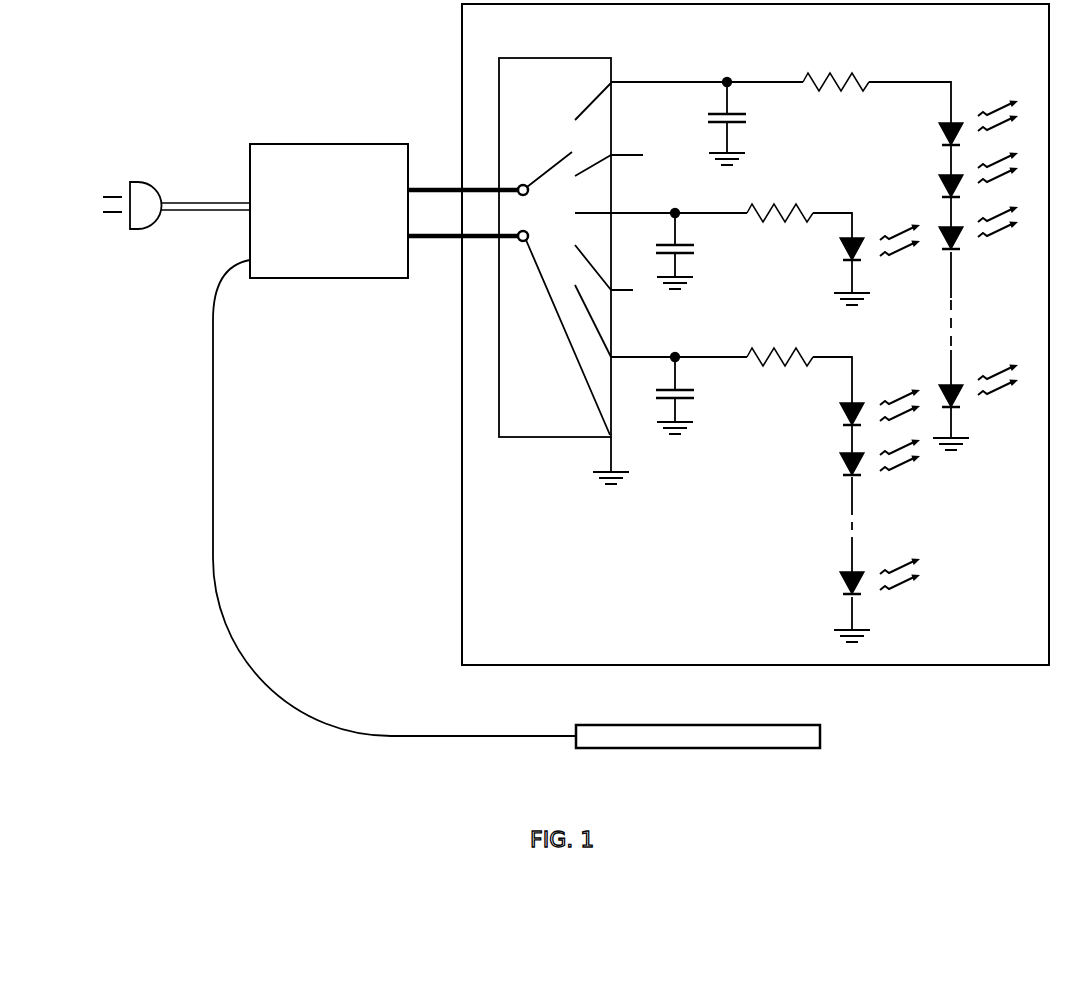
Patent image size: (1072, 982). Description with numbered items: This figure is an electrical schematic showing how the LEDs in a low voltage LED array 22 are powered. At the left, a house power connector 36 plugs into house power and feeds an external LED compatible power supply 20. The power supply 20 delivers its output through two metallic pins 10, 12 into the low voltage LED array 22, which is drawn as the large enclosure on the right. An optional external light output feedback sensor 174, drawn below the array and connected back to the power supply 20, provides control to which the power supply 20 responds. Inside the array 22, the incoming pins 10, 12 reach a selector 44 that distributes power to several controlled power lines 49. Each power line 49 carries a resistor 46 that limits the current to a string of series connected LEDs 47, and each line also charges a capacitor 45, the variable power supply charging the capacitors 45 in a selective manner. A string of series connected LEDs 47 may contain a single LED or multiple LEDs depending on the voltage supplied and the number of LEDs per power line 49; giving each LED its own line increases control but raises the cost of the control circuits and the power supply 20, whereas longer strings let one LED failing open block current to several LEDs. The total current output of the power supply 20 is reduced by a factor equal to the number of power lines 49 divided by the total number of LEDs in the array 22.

The metallic pin 10 is at (435, 187).
The metallic pin 12 is at (437, 248).
The external LED compatible power supply 20 is at (300, 280).
The low voltage LED array 22 is at (460, 62).
The house power connector 36 is at (141, 231).
The switch 44 is at (553, 440).
The capacitor 45 is at (752, 120).
The resistor 46 is at (838, 65).
The series connected LEDs 47 is at (935, 132).
The controlled power line 49 is at (727, 82).
The external light output feedback sensor 174 is at (822, 735).